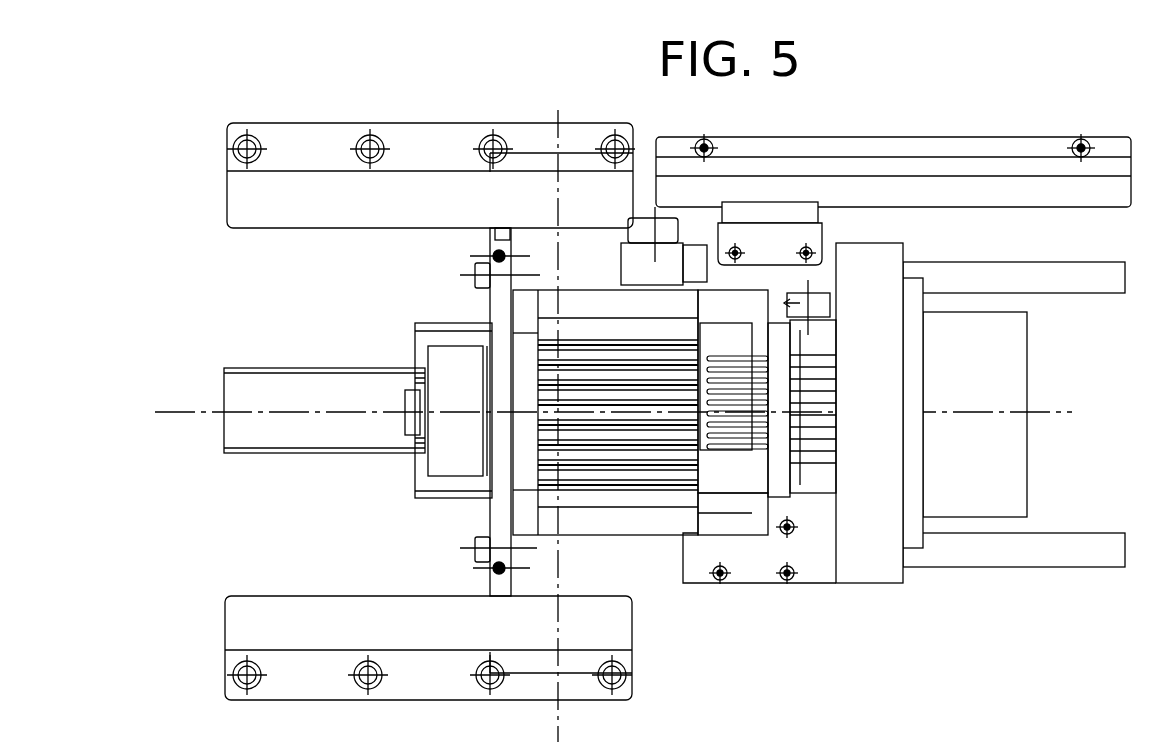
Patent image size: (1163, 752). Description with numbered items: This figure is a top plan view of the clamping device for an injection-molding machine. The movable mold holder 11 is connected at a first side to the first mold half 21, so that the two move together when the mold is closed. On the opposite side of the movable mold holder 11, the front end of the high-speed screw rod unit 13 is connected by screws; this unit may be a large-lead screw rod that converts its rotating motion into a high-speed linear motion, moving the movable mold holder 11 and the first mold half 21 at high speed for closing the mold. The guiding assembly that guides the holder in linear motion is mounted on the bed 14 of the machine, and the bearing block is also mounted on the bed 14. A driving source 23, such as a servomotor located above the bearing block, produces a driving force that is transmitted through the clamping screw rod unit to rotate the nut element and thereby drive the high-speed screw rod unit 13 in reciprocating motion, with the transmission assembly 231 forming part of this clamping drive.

The movable mold holder 11 is at (872, 567).
The high-speed screw rod unit 13 is at (283, 393).
The bed 14 is at (1064, 550).
The first mold half 21 is at (985, 503).
The driving source 23 is at (647, 518).
The transmission assembly 231 is at (425, 458).